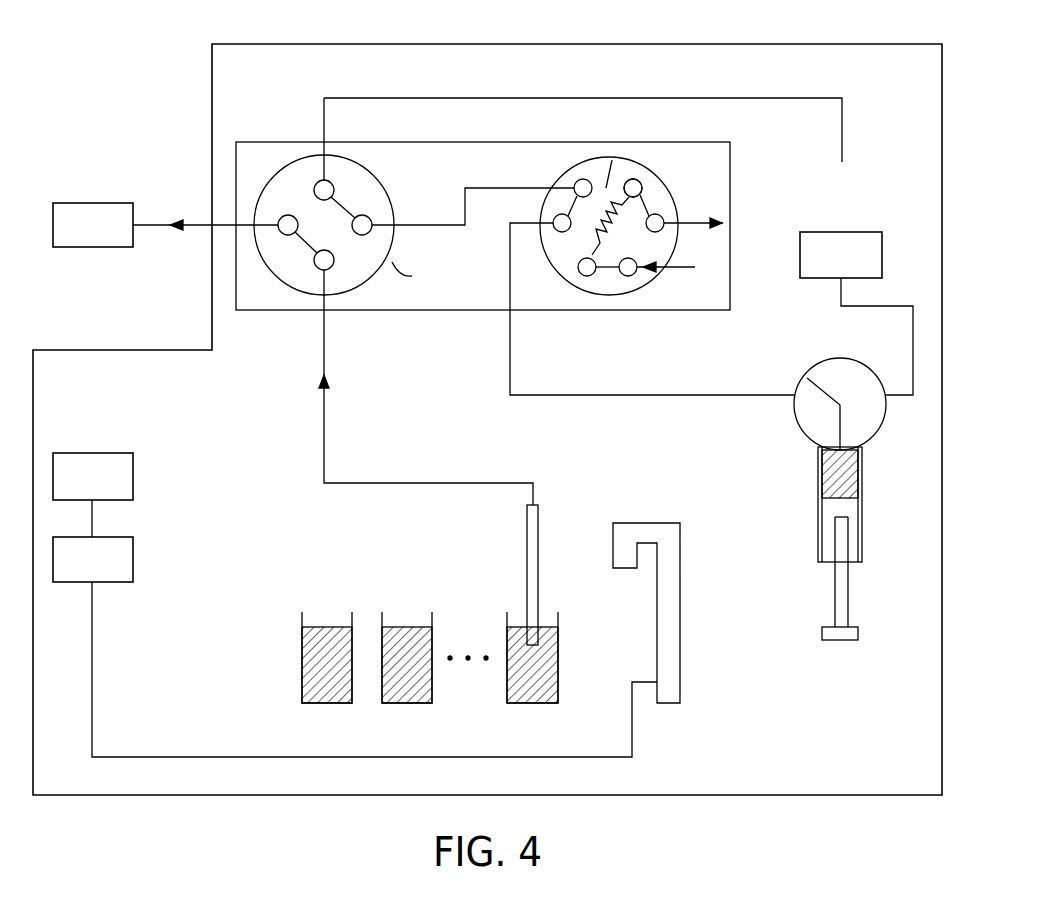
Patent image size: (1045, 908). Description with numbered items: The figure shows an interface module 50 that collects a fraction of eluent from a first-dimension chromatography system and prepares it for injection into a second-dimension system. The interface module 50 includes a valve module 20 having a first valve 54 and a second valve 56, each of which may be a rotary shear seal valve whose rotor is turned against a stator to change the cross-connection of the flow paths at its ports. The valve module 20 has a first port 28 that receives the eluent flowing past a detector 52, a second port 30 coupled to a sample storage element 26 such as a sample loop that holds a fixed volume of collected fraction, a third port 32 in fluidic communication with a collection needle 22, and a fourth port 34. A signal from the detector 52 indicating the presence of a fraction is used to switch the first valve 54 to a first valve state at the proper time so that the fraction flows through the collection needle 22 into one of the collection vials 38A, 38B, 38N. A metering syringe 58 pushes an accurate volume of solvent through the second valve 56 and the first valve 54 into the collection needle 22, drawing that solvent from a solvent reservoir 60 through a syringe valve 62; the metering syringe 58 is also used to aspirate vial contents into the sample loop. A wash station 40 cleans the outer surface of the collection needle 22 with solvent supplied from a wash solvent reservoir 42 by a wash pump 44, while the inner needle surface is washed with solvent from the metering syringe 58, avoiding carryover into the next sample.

The valve module 20 is at (272, 141).
The collection needle 22 is at (526, 580).
The sample storage element 26 is at (613, 159).
The first port 28 is at (236, 226).
The second port 30 is at (643, 186).
The third port 32 is at (324, 300).
The fourth port 34 is at (510, 310).
The collection vial 38A is at (352, 672).
The collection vial 38B is at (432, 672).
The collection vial 38N is at (558, 672).
The wash station 40 is at (680, 612).
The wash solvent reservoir 42 is at (93, 495).
The wash pump 44 is at (355, 647).
The interface module 50 is at (210, 83).
The detector 52 is at (165, 225).
The first valve 54 is at (415, 275).
The second valve 56 is at (608, 296).
The metering syringe 58 is at (863, 543).
The solvent reservoir 60 is at (856, 313).
The syringe valve 62 is at (791, 424).